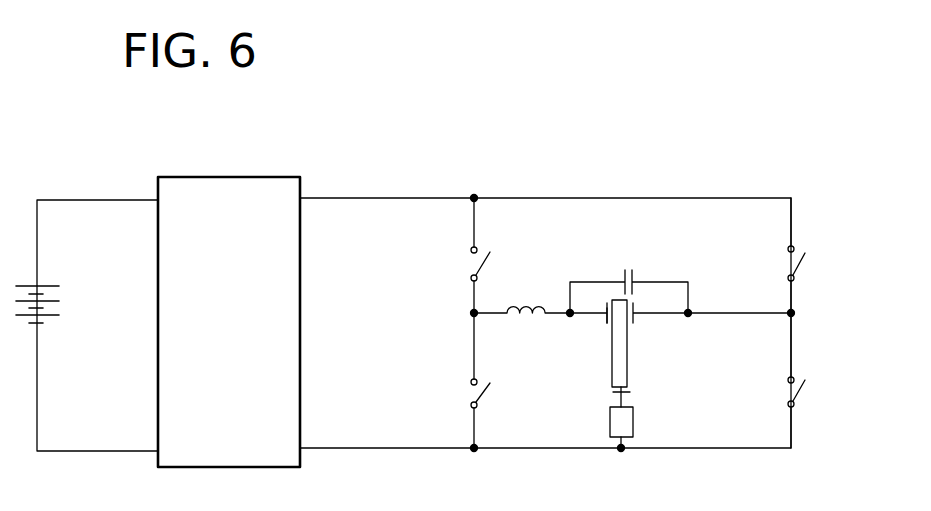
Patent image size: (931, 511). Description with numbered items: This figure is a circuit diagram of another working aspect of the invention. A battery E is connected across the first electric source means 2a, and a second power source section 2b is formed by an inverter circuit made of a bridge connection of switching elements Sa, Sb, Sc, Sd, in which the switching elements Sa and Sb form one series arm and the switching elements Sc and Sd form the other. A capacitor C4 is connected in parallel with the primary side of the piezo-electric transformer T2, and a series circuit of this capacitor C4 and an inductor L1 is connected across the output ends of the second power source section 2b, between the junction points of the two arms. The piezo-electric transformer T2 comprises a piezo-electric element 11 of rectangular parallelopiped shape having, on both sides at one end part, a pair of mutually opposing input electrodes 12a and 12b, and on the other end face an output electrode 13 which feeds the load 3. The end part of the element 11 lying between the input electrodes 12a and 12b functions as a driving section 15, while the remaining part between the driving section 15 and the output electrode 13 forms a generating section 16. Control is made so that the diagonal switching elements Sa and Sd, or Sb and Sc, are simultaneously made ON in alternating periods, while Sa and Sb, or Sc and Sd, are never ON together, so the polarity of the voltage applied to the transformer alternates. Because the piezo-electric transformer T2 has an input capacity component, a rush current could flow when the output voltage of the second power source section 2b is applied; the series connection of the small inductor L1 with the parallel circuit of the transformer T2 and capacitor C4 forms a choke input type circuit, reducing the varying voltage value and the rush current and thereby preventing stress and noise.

The first electric source means 2a is at (245, 177).
The second power source section 2b is at (503, 188).
The battery E is at (42, 284).
The switching element Sa is at (455, 260).
The switching element Sb is at (455, 394).
The switching element Sc is at (822, 260).
The switching element Sd is at (818, 394).
The inductor L1 is at (522, 292).
The capacitor C4 is at (631, 275).
The piezo-electric transformer T2 is at (661, 308).
The driving section 15 is at (606, 310).
The input electrode 12a is at (605, 322).
The input electrode 12b is at (636, 322).
The piezo-electric element 11 is at (630, 358).
The generating section 16 is at (613, 367).
The output electrode 13 is at (627, 391).
The load 3 is at (633, 418).